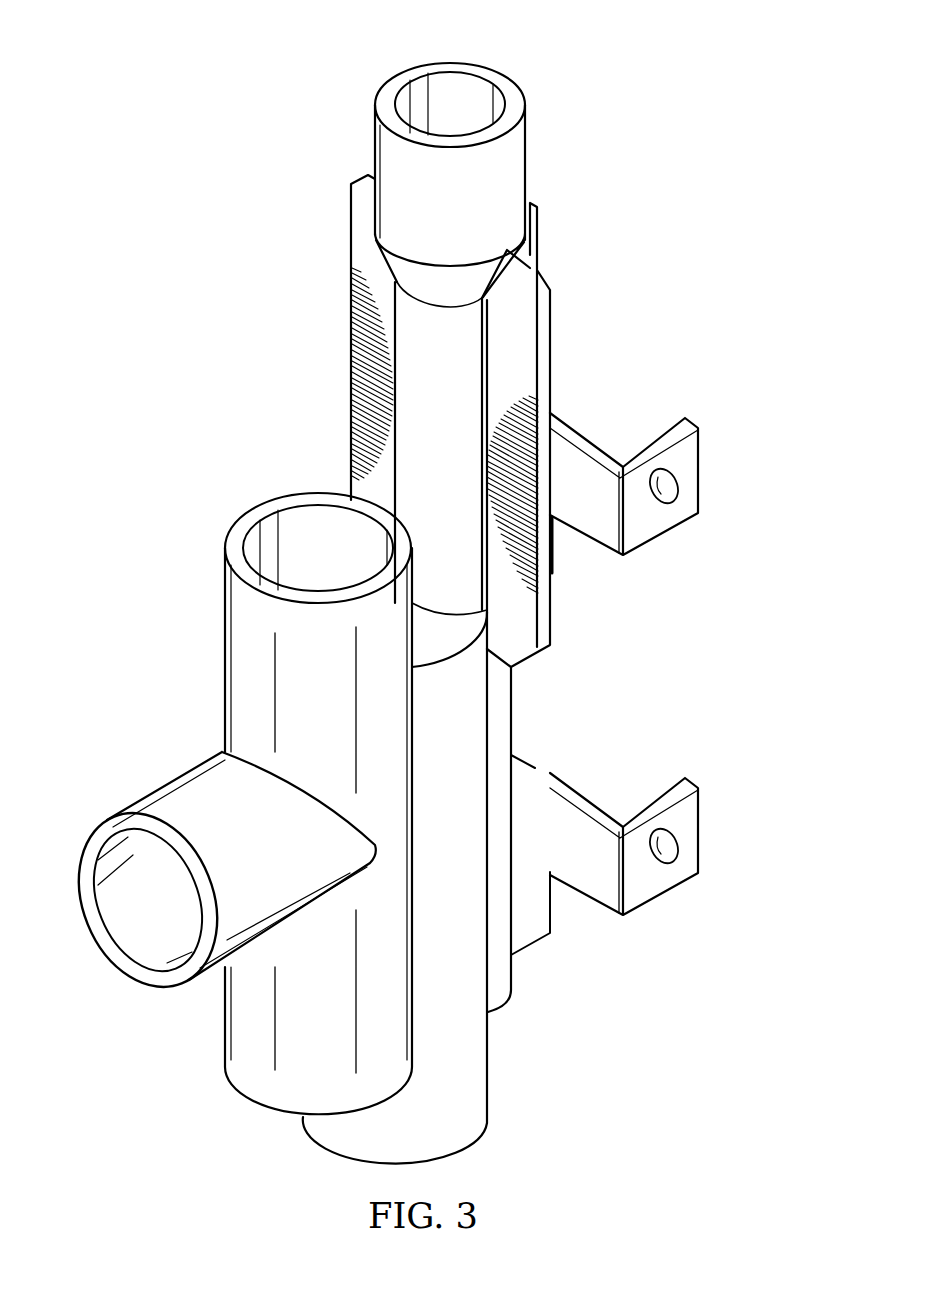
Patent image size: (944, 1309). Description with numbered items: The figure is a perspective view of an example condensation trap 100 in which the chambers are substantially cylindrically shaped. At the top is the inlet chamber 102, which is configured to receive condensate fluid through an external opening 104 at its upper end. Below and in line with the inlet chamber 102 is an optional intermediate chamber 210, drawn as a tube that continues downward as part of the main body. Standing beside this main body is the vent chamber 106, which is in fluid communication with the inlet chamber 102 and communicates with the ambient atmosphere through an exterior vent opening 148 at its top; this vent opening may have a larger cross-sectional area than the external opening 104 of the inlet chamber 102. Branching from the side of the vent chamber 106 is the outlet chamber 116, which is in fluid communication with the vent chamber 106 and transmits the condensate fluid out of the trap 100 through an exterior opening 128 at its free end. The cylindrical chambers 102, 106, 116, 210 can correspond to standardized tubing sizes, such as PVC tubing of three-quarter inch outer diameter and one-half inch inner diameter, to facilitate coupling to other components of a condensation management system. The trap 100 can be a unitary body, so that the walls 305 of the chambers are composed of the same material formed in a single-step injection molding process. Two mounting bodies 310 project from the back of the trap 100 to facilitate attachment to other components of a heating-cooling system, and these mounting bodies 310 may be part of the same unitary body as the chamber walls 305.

The trap 100 is at (198, 255).
The inlet chamber 102 is at (393, 57).
The external opening 104 is at (468, 88).
The vent chamber 106 is at (235, 498).
The outlet chamber 116 is at (133, 781).
The exterior opening 128 is at (122, 921).
The exterior vent opening 148 is at (307, 520).
The intermediate chamber 210 is at (432, 594).
The walls 305 is at (126, 968).
The mounting bodies 310 is at (647, 390).